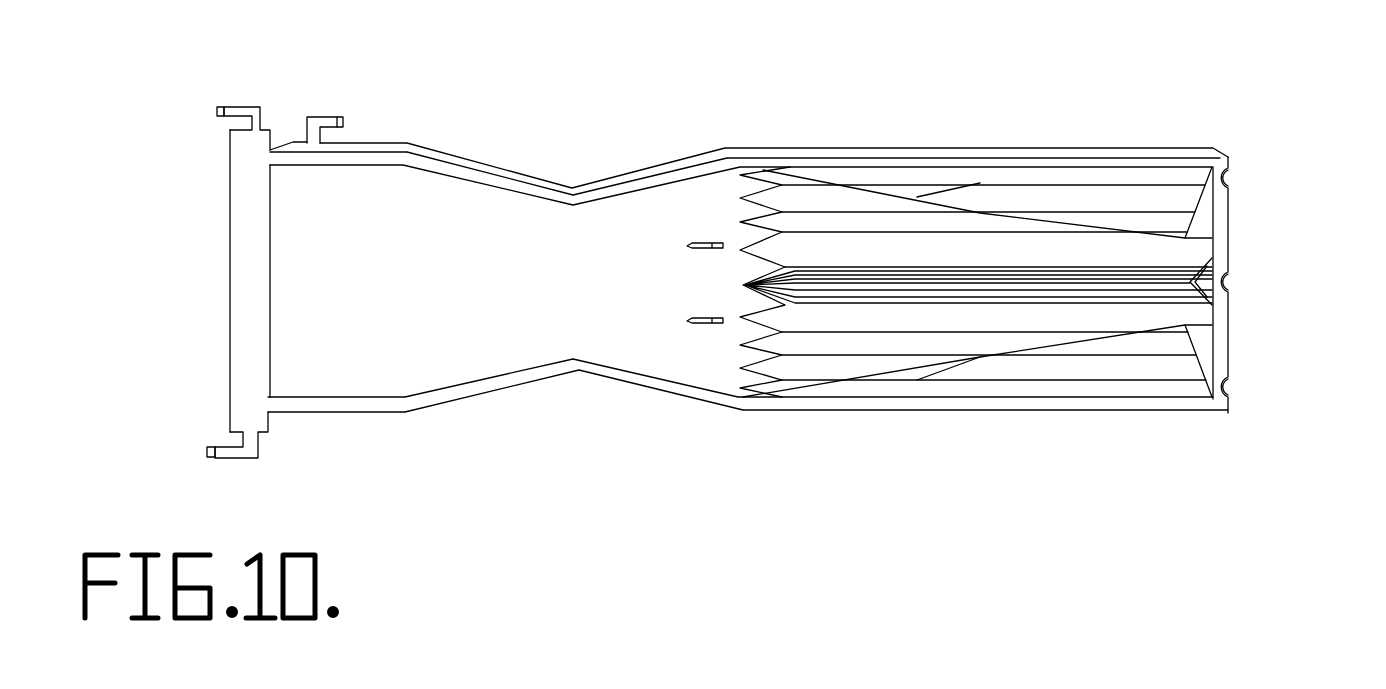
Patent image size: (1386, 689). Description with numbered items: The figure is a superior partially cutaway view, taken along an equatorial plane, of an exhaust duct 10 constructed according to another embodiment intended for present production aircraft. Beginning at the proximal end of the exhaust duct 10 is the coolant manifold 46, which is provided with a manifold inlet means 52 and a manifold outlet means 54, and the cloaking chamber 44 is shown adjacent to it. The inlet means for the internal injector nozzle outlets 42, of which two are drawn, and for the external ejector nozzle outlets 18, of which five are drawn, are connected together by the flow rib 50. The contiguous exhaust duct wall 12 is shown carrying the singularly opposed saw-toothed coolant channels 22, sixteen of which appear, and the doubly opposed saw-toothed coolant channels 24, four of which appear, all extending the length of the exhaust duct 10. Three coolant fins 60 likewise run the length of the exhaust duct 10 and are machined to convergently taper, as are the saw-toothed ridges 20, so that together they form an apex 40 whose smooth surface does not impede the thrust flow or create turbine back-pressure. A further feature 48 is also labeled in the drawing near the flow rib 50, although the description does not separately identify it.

The exhaust duct 10 is at (1008, 424).
The contiguous exhaust duct wall 12 is at (1150, 403).
The external ejector nozzle outlets 18 is at (1230, 173).
The saw-toothed ridges 20 is at (780, 372).
The singularly opposed saw-toothed coolant channels 22 is at (803, 364).
The doubly opposed saw-toothed coolant channels 24 is at (1180, 259).
The apex 40 is at (740, 203).
The internal injector nozzle outlets 42 is at (705, 240).
The cloaking chamber 44 is at (410, 270).
The coolant manifold 46 is at (248, 265).
The mounting flange 48 is at (320, 123).
The flow rib 50 is at (468, 165).
The manifold inlet means 52 is at (215, 450).
The manifold outlet means 54 is at (232, 108).
The coolant fins 60 is at (1230, 207).